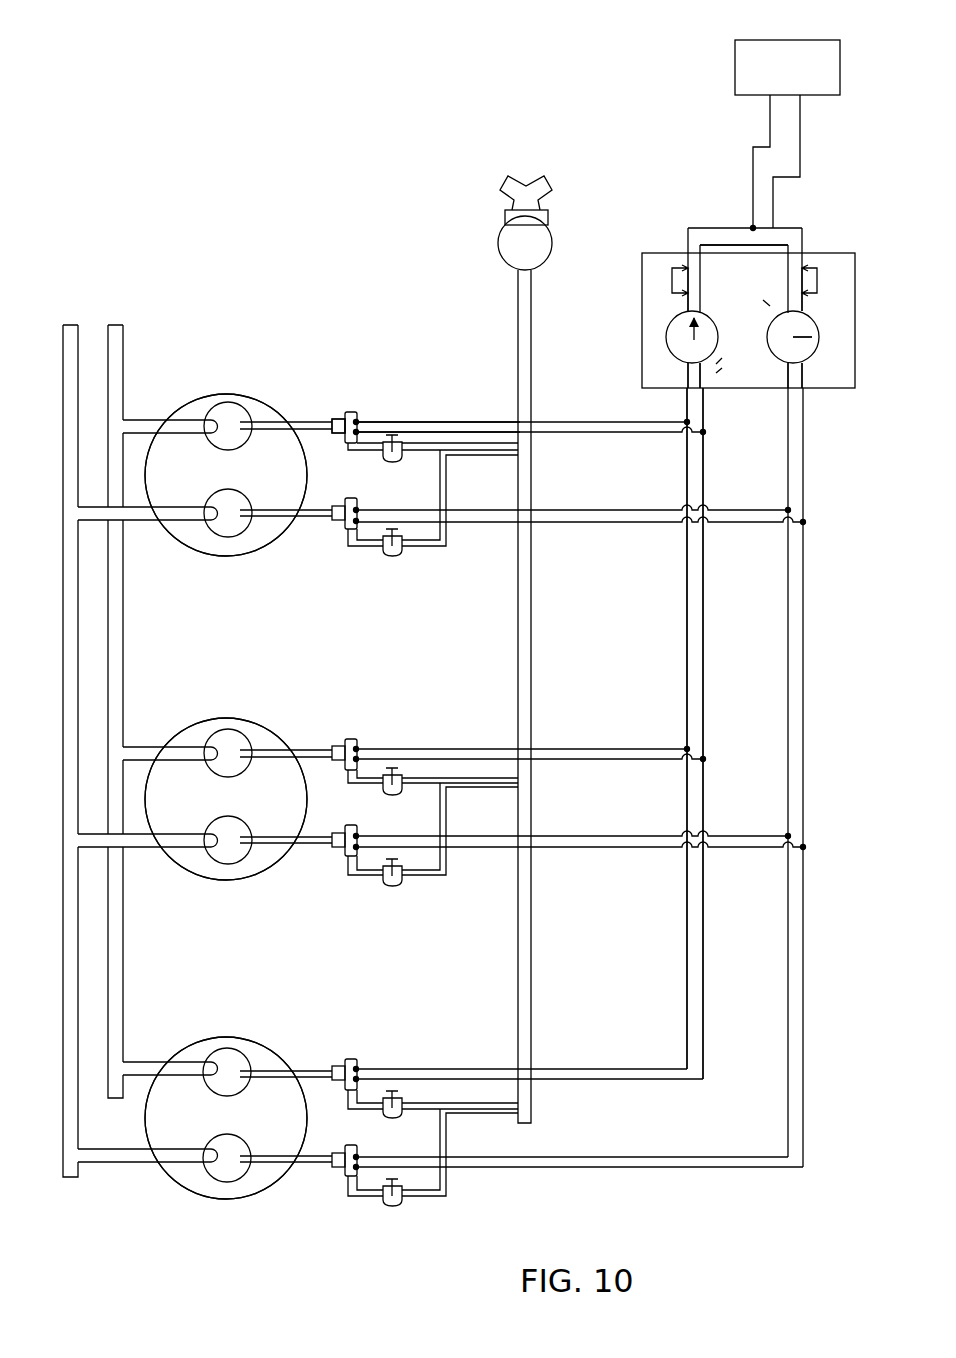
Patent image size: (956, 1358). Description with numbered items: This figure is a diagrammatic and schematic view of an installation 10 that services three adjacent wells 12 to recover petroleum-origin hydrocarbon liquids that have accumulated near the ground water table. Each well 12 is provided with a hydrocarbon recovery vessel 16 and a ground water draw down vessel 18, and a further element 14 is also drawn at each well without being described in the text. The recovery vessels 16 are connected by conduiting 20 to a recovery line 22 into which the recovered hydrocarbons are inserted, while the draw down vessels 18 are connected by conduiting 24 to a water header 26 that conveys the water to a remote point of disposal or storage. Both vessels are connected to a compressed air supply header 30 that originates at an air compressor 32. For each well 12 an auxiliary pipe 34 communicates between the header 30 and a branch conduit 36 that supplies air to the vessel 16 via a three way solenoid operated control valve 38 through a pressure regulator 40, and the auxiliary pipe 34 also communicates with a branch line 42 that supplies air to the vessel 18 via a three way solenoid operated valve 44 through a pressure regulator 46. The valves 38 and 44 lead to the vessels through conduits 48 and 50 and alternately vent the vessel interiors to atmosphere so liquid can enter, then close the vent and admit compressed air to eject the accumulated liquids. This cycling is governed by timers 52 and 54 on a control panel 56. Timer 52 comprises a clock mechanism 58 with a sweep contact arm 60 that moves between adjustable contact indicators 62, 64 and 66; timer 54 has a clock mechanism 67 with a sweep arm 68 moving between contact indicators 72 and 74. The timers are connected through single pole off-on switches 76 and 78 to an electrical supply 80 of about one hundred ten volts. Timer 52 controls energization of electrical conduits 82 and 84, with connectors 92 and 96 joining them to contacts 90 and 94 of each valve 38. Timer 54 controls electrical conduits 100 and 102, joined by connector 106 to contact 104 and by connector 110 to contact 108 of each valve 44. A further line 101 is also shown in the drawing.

The installation 10 is at (292, 160).
The well 12 is at (298, 390).
The pump housing 14 is at (197, 397).
The hydrocarbon recovery vessel 16 is at (247, 398).
The ground water draw down vessel 18 is at (222, 548).
The conduiting 20 is at (142, 420).
The recovery line 22 is at (114, 325).
The conduiting 24 is at (143, 522).
The water header 26 is at (66, 327).
The compressed air supply header 30 is at (533, 370).
The air compressor 32 is at (567, 185).
The auxiliary pipe 34 is at (535, 469).
The branch conduit 36 is at (456, 430).
The three way solenoid operated control valve 38 is at (364, 400).
The pressure regulator 40 is at (407, 422).
The branch line 42 is at (453, 500).
The three way solenoid operated valve 44 is at (332, 535).
The pressure regulator 46 is at (394, 566).
The conduit 48 is at (330, 415).
The conduit 50 is at (270, 540).
The timer 52 is at (660, 339).
The timer 54 is at (838, 338).
The control panel 56 is at (850, 245).
The clock mechanism 58 is at (656, 325).
The sweep contact arm 60 is at (690, 337).
The contact indicator 62 is at (660, 300).
The contact indicator 64 is at (722, 305).
The contact indicator 66 is at (720, 372).
The clock mechanism 67 is at (836, 313).
The sweep arm 68 is at (808, 335).
The contact indicator 72 is at (818, 305).
The contact indicator 74 is at (822, 360).
The single pole off-on switch 76 is at (665, 258).
The single pole off-on switch 78 is at (828, 265).
The electrical supply 80 is at (748, 40).
The electrical conduit 82 is at (685, 627).
The electrical conduit 84 is at (705, 640).
The contact 90 is at (366, 410).
The connector 92 is at (548, 421).
The contact 94 is at (310, 470).
The connector 96 is at (645, 434).
The electrical conduit 100 is at (786, 480).
The control conduit 101 is at (612, 1169).
The electrical conduit 102 is at (805, 484).
The contact 104 is at (358, 508).
The electrical connector 106 is at (574, 513).
The contact 108 is at (345, 548).
The connector 110 is at (640, 526).